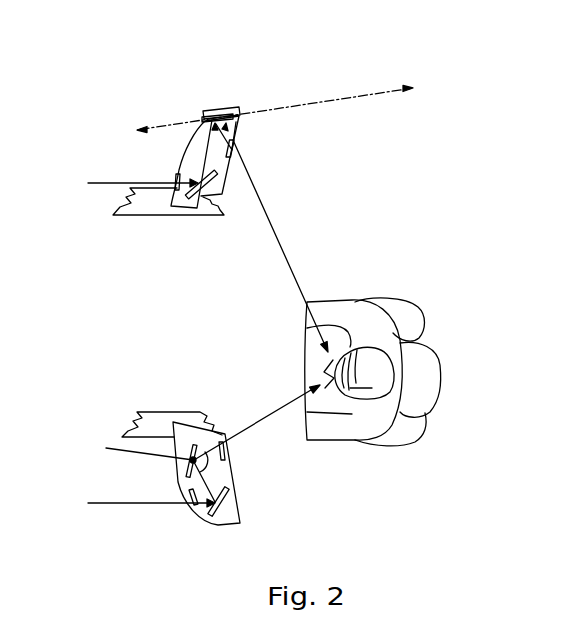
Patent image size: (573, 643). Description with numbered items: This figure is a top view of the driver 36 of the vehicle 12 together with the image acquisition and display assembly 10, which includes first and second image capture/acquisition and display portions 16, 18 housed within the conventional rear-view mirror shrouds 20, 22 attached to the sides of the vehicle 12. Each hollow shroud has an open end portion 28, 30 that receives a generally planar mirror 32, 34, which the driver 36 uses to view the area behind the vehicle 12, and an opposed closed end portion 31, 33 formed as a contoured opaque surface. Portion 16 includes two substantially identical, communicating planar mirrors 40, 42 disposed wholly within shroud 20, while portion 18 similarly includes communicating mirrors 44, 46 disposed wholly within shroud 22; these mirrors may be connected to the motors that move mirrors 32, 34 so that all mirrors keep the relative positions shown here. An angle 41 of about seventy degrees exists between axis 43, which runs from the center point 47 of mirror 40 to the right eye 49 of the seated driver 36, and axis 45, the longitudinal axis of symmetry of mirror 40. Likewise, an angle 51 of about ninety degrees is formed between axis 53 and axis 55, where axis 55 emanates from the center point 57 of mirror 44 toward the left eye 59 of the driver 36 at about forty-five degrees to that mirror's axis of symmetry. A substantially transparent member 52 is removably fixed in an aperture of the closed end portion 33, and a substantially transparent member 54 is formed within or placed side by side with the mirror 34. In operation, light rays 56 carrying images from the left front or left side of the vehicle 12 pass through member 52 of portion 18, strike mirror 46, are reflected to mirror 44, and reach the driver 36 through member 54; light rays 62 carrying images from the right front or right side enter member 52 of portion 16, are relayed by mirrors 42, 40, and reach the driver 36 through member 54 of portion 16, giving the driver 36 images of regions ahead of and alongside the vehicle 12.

The image acquisition and display assembly 10 is at (432, 165).
The vehicle 12 is at (388, 351).
The first image capture/acquisition and display portion 16 is at (248, 288).
The second image capture/acquisition and display portion 18 is at (216, 470).
The rear-view mirror shroud 20 is at (216, 111).
The rear-view mirror shroud 22 is at (136, 444).
The open end portion 28 is at (229, 193).
The open end portion 30 is at (240, 518).
The closed end portion 31 is at (201, 118).
The planar mirror 32 is at (243, 110).
The closed end portion 33 is at (180, 481).
The planar mirror 34 is at (229, 476).
The driver 36 is at (394, 335).
The mirror 40 is at (213, 111).
The angle 41 is at (240, 126).
The mirror 42 is at (198, 209).
The axis 43 is at (282, 246).
The mirror 44 is at (194, 444).
The axis 45 is at (388, 88).
The mirror 46 is at (220, 516).
The center point 47 is at (217, 110).
The right eye 49 is at (334, 356).
The angle 51 is at (228, 452).
The transparent member 52 is at (177, 176).
The axis 53 is at (205, 481).
The transparent member 54 is at (234, 152).
The axis 55 is at (268, 416).
The light rays 56 is at (130, 503).
The center point 57 is at (138, 432).
The left eye 59 is at (331, 388).
The light rays 62 is at (98, 183).